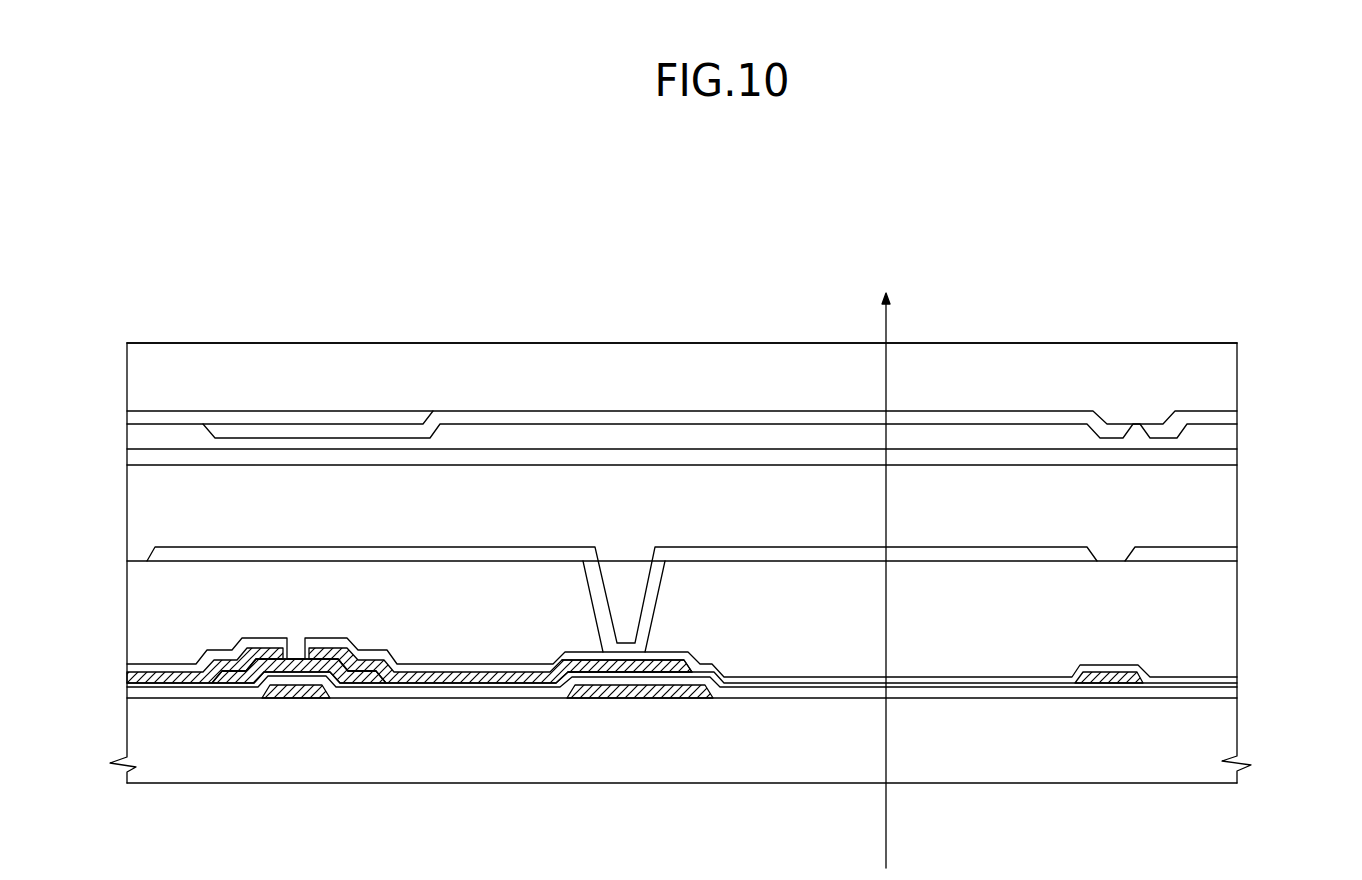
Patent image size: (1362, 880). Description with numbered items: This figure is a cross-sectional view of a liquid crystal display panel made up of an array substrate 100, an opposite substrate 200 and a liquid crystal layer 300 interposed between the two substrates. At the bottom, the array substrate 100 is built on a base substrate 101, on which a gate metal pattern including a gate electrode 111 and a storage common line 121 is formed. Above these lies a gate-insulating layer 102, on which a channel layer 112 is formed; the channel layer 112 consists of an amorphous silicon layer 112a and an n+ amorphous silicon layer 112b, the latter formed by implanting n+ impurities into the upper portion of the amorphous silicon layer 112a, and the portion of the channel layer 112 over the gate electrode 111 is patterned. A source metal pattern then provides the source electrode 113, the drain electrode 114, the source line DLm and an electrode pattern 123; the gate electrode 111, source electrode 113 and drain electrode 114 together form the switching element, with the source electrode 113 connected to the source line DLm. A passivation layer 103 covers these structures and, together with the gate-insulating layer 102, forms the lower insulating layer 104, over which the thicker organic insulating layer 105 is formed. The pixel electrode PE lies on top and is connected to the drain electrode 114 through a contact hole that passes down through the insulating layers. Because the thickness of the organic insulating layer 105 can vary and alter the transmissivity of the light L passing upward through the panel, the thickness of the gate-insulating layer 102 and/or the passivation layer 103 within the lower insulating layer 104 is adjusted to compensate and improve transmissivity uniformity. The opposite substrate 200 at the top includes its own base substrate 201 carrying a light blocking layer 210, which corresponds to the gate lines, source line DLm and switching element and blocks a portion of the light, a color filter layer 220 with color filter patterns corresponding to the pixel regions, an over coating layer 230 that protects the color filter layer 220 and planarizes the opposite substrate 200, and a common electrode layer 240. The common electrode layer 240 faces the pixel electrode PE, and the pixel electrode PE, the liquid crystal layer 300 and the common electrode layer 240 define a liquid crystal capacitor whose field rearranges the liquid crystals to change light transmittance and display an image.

The opposite substrate 200 is at (110, 343).
The liquid crystal layer 300 is at (110, 466).
The array substrate 100 is at (110, 562).
The base substrate 201 is at (1237, 371).
The light blocking layer 210 is at (1167, 421).
The color filter layer 220 is at (1232, 418).
The over coating layer 230 is at (1232, 438).
The common electrode layer 240 is at (1232, 459).
The organic insulating layer 105 is at (1233, 628).
The lower insulating layer 104 is at (740, 692).
The passivation layer 103 is at (1233, 681).
The gate-insulating layer 102 is at (1233, 695).
The base substrate 101 is at (1233, 736).
The gate electrode 111 is at (286, 699).
The channel layer 112 is at (320, 767).
The amorphous silicon layer 112a is at (352, 681).
The n+ amorphous silicon layer 112b is at (368, 681).
The source electrode 113 is at (202, 679).
The drain electrode 114 is at (467, 681).
The pixel electrode PE is at (521, 551).
The storage common line 121 is at (600, 693).
The electrode pattern 123 is at (659, 670).
The source line DLm is at (1110, 681).
The light L is at (886, 565).